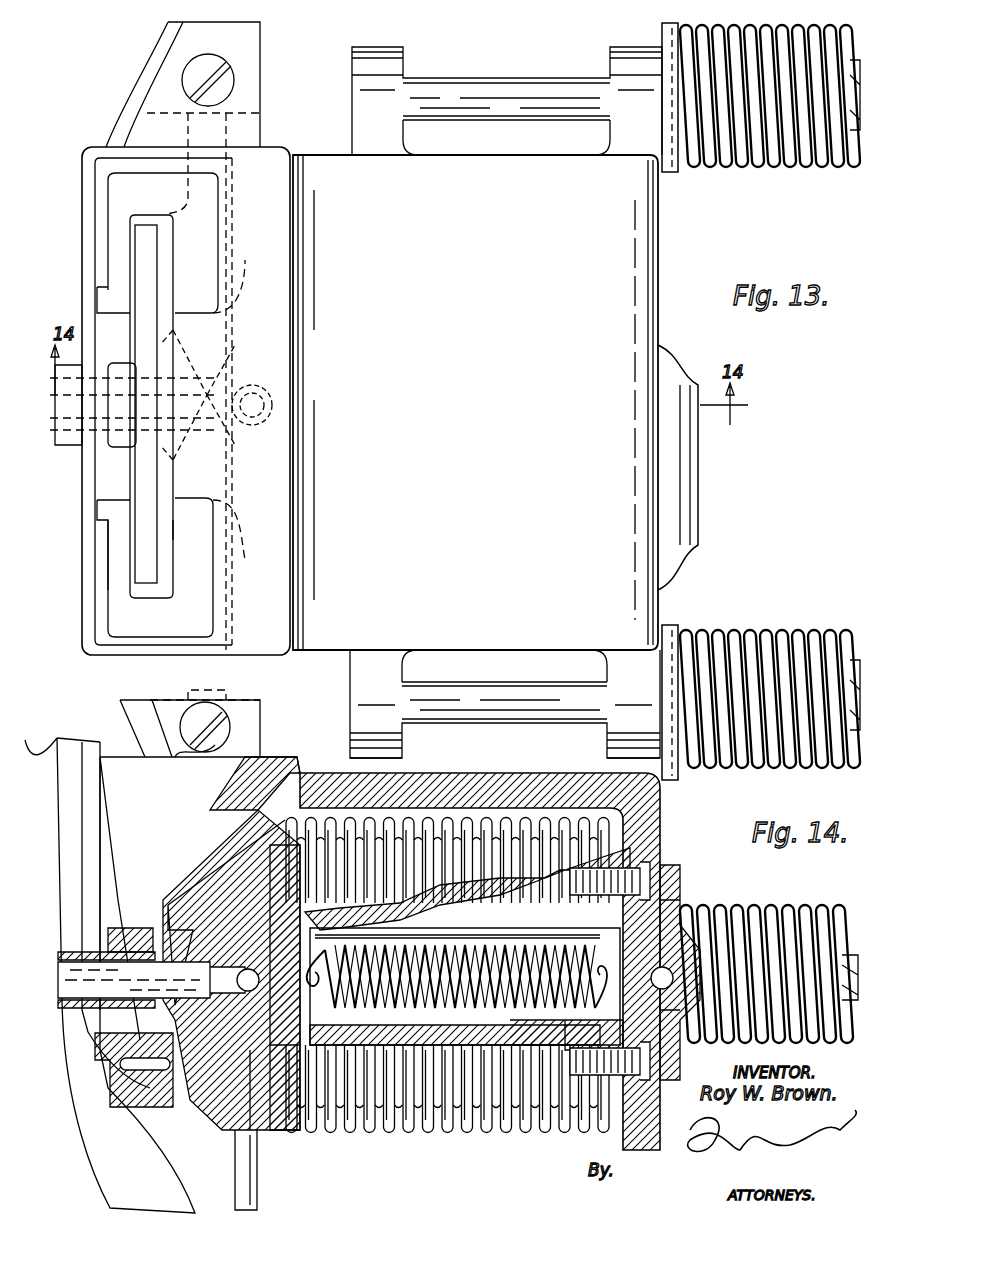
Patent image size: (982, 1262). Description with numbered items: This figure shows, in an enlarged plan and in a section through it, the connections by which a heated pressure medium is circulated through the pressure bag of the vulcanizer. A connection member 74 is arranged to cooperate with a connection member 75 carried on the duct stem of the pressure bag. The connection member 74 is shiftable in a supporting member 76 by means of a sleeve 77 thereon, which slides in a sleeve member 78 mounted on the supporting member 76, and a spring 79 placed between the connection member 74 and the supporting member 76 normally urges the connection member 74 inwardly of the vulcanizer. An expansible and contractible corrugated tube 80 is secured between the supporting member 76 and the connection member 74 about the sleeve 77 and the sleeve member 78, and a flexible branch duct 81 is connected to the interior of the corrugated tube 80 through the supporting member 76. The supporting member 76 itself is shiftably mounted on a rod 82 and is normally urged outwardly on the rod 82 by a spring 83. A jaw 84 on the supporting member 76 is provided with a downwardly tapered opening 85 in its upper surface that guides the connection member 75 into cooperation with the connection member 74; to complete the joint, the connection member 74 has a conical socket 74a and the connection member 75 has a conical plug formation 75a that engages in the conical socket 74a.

In FIG. 13, the connection member 74 is at (207, 495).
In FIG. 14, the connection member 74 is at (225, 870).
In FIG. 14, the conical socket 74a is at (185, 905).
In FIG. 13, the connection member 75 is at (141, 462).
In FIG. 14, the connection member 75 is at (148, 912).
In FIG. 14, the conical plug formation 75a is at (190, 1050).
In FIG. 13, the supporting member 76 is at (640, 302).
In FIG. 14, the supporting member 76 is at (505, 783).
In FIG. 14, the sleeve 77 is at (435, 915).
In FIG. 14, the sleeve member 78 is at (628, 866).
In FIG. 14, the spring 79 is at (540, 1018).
In FIG. 14, the corrugated tube 80 is at (550, 812).
In FIG. 14, the flexible branch duct 81 is at (680, 1110).
In FIG. 13, the rod 82 is at (483, 85).
In FIG. 14, the rod 82 is at (505, 758).
In FIG. 13, the spring 83 is at (736, 170).
In FIG. 14, the spring 83 is at (800, 905).
In FIG. 13, the jaw 84 is at (102, 247).
In FIG. 14, the jaw 84 is at (105, 768).
In FIG. 13, the tapered opening 85 is at (200, 250).
In FIG. 14, the tapered opening 85 is at (206, 778).